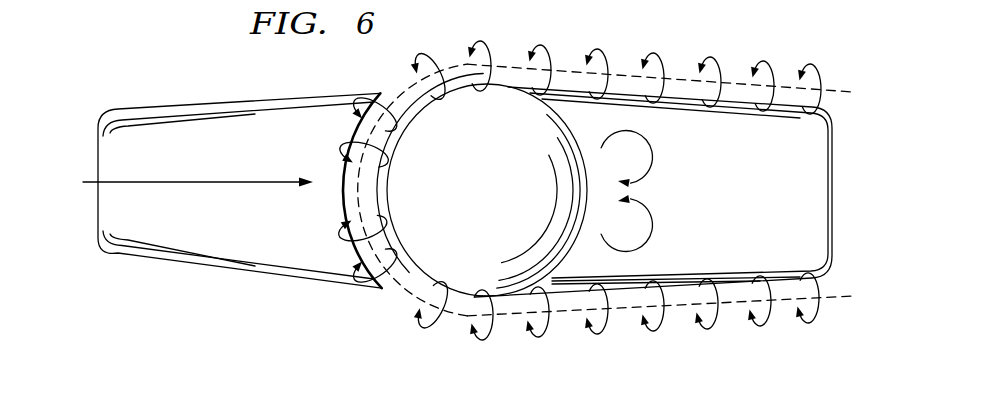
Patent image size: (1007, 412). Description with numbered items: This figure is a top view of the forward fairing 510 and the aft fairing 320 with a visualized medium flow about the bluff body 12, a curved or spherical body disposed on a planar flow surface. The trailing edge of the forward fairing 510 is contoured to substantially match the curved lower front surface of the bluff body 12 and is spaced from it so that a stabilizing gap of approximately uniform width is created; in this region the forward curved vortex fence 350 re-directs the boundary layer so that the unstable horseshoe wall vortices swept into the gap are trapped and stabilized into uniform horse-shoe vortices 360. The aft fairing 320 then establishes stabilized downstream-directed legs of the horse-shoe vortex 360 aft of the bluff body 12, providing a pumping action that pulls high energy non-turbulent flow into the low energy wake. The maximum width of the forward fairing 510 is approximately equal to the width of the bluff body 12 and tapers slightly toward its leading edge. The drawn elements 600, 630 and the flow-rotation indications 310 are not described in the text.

The bluff body 12 is at (427, 272).
The rotational flow arrows 310 is at (652, 156).
The aft fairing 320 is at (827, 160).
The forward curved vortex fence 350 is at (358, 124).
The horse-shoe vortex 360 is at (543, 46).
The forward fairing 510 is at (157, 132).
The nozzle assembly 600 is at (468, 209).
The nozzle liner 630 is at (240, 102).